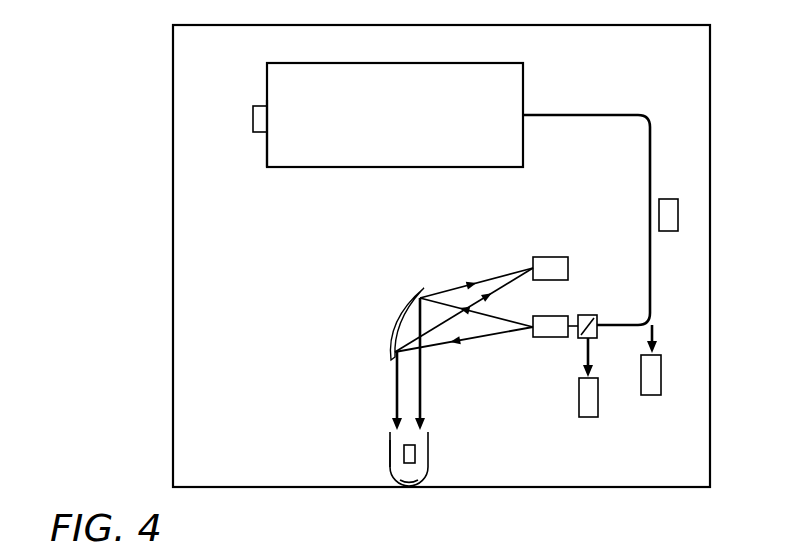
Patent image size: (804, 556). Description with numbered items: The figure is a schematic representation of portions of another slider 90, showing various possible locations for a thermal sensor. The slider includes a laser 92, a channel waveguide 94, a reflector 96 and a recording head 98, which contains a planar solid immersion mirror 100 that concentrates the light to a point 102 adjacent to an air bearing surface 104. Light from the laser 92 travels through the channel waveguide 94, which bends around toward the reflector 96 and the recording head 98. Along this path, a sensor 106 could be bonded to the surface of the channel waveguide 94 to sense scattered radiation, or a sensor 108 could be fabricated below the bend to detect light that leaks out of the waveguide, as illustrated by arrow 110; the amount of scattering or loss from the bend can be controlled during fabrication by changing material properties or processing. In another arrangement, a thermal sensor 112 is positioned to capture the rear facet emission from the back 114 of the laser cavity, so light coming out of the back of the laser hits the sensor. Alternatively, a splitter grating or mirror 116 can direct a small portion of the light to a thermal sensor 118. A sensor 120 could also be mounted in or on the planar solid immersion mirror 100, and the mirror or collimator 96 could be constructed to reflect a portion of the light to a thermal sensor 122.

The slider 90 is at (120, 108).
The laser 92 is at (357, 168).
The channel waveguide 94 is at (583, 115).
The reflector 96 is at (397, 306).
The recording head 98 is at (372, 444).
The planar solid immersion mirror 100 is at (390, 470).
The point 102 is at (407, 487).
The air bearing surface 104 is at (258, 488).
The sensor 106 is at (668, 231).
The sensor 108 is at (662, 378).
The arrow 110 is at (656, 338).
The thermal sensor 112 is at (253, 120).
The back of the laser cavity 114 is at (267, 150).
The splitter grating or mirror 116 is at (582, 340).
The thermal sensor 118 is at (578, 398).
The sensor 120 is at (415, 452).
The thermal sensor 122 is at (548, 257).